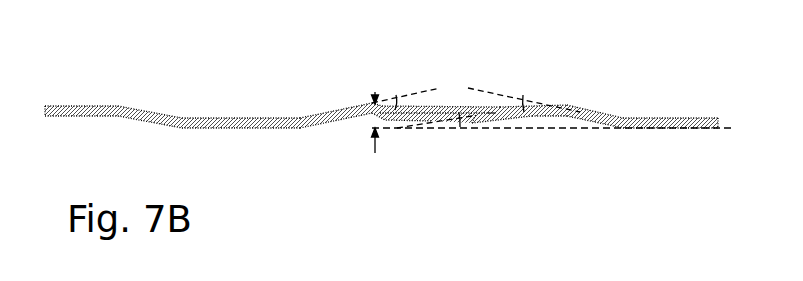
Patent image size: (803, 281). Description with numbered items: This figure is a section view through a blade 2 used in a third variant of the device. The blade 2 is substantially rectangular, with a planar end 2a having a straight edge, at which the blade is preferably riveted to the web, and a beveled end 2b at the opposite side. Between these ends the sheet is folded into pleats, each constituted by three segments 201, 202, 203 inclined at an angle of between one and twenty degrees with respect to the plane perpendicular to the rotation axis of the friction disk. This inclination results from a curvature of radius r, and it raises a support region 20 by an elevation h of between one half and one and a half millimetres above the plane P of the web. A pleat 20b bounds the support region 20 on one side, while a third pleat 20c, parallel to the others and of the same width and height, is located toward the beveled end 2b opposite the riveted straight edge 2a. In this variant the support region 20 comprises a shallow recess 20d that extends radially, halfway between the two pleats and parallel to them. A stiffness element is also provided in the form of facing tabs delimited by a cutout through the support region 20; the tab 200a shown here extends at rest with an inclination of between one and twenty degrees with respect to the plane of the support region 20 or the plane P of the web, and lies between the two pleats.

The blade 2 is at (249, 146).
The planar end 2a is at (718, 119).
The beveled end 2b is at (45, 108).
The support region 20 is at (408, 102).
The pleat 20b is at (327, 106).
The third pleat 20c is at (151, 100).
The shallow recess 20d is at (461, 107).
The tab 200a is at (492, 120).
The pleat segment 201 is at (625, 124).
The pleat segment 202 is at (592, 110).
The pleat segment 203 is at (568, 107).
The radius of curvature r is at (122, 118).
The elevation h is at (365, 127).
The plane of web P is at (747, 127).